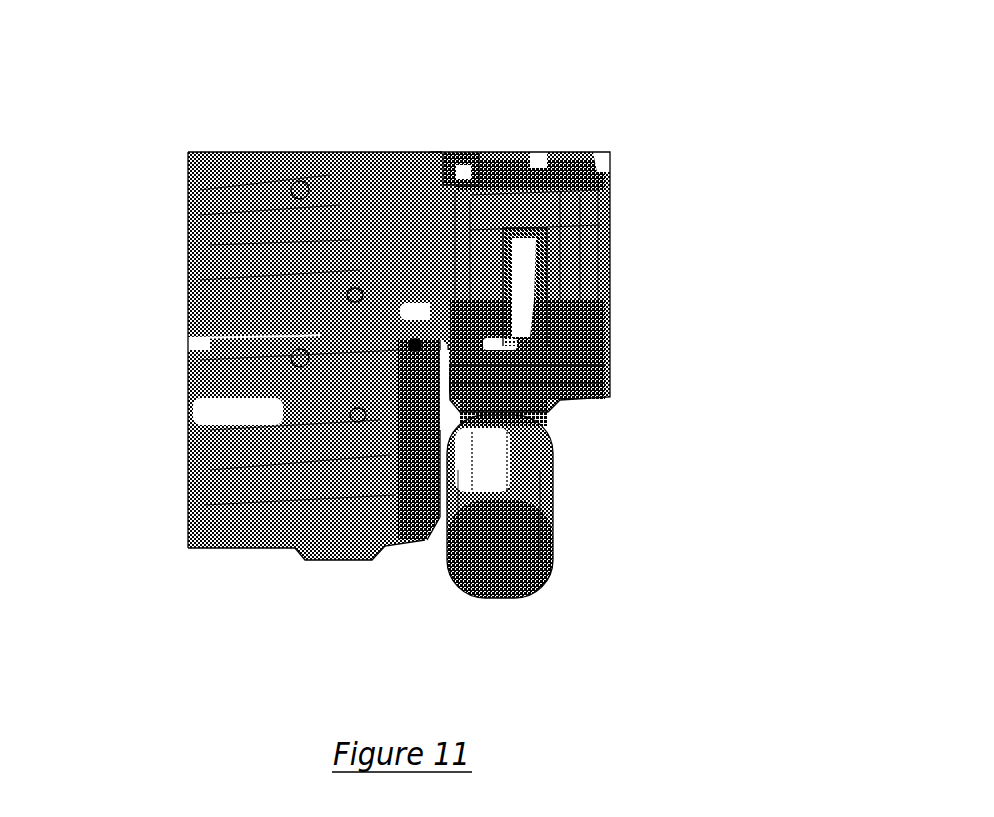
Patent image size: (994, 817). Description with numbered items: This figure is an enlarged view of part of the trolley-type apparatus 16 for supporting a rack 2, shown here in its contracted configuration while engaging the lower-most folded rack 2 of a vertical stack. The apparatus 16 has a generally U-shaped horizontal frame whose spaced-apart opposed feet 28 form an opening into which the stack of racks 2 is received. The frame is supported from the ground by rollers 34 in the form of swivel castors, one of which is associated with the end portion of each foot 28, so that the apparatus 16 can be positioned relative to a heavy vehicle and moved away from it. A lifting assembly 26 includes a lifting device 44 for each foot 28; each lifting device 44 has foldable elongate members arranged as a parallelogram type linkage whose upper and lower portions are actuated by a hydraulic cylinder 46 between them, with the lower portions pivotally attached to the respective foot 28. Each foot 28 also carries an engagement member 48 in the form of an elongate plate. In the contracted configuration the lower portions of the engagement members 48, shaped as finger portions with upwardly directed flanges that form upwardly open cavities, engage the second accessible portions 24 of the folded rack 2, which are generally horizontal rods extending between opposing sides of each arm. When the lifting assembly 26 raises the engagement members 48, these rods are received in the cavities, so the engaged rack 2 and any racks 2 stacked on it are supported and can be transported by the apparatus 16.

The rack 2 is at (177, 272).
The apparatus 16 is at (611, 413).
The second accessible portions 24 is at (413, 353).
The lifting assembly 26 is at (629, 148).
The lifting device 44 is at (593, 236).
The feet 28 is at (578, 400).
The rollers 34 is at (542, 567).
The hydraulic cylinder 46 is at (535, 294).
The engagement member 48 is at (460, 157).